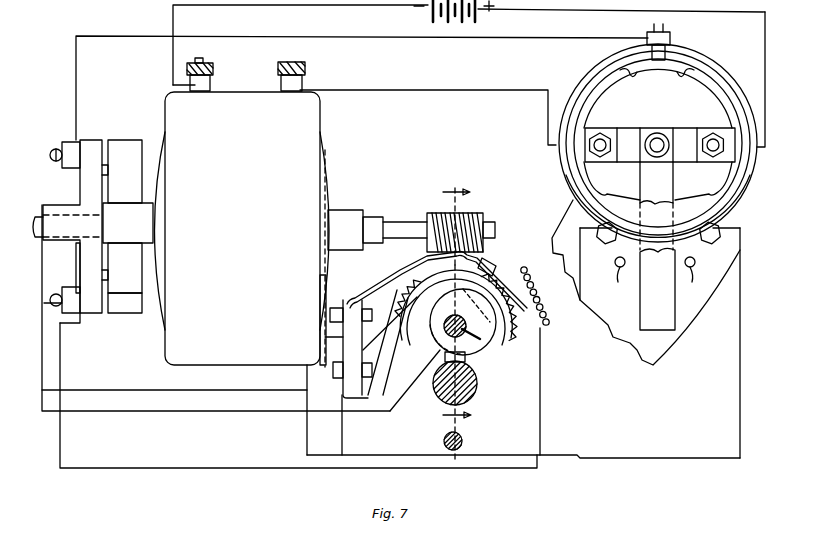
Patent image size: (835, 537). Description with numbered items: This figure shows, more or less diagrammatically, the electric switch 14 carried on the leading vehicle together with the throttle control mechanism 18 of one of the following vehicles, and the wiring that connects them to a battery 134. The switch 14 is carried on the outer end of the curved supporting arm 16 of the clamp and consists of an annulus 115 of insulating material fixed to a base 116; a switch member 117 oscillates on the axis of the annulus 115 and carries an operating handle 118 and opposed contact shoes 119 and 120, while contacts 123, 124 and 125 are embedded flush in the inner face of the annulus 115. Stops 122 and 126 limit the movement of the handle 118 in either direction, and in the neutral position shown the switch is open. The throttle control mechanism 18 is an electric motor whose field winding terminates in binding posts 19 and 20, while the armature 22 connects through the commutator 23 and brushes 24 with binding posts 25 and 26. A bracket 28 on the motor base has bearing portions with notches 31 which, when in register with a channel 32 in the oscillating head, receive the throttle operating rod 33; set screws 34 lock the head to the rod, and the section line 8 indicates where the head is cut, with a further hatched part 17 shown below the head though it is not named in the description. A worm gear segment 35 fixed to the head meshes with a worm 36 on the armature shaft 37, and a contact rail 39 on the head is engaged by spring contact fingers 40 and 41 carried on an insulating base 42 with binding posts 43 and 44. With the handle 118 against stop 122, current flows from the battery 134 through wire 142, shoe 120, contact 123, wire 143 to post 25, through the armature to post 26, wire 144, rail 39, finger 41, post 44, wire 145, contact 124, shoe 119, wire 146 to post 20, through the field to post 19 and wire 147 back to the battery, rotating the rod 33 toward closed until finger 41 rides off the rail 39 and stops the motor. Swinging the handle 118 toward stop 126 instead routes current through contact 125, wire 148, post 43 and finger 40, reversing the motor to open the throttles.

The section line 8 is at (450, 298).
The electric switch 14 is at (666, 143).
The curved supporting arm 16 is at (728, 220).
The shaft 17 is at (478, 385).
The throttle control mechanism 18 is at (242, 229).
The binding post 19 is at (204, 61).
The binding post 20 is at (300, 62).
The armature 22 is at (330, 202).
The commutator 23 is at (128, 223).
The brushes 24 is at (122, 226).
The binding post 25 is at (63, 142).
The binding post 26 is at (44, 303).
The bracket 28 is at (401, 354).
The notches 31 is at (470, 358).
The channel 32 is at (492, 333).
The throttle operating rod 33 is at (444, 338).
The set screws 34 is at (515, 272).
The worm gear segment 35 is at (498, 262).
The worm 36 is at (476, 214).
The armature shaft 37 is at (406, 222).
The contact rail 39 is at (456, 307).
The spring contact finger 40 is at (374, 347).
The spring contact finger 41 is at (390, 280).
The insulating base 42 is at (325, 338).
The binding post 43 is at (333, 371).
The binding post 44 is at (330, 313).
The annulus 115 is at (597, 78).
The base 116 is at (694, 90).
The switch member 117 is at (630, 133).
The operating handle 118 is at (657, 246).
The contact shoe 119 is at (596, 106).
The contact shoe 120 is at (722, 115).
The stop 122 is at (696, 280).
The contact 123 is at (660, 62).
The contact 124 is at (618, 200).
The contact 125 is at (700, 200).
The stop 126 is at (616, 280).
The battery 134 is at (433, 18).
The wire 142 is at (532, 13).
The wire 143 is at (76, 101).
The wire 144 is at (60, 347).
The wire 145 is at (307, 355).
The wire 146 is at (376, 90).
The wire 147 is at (173, 75).
The wire 148 is at (342, 438).